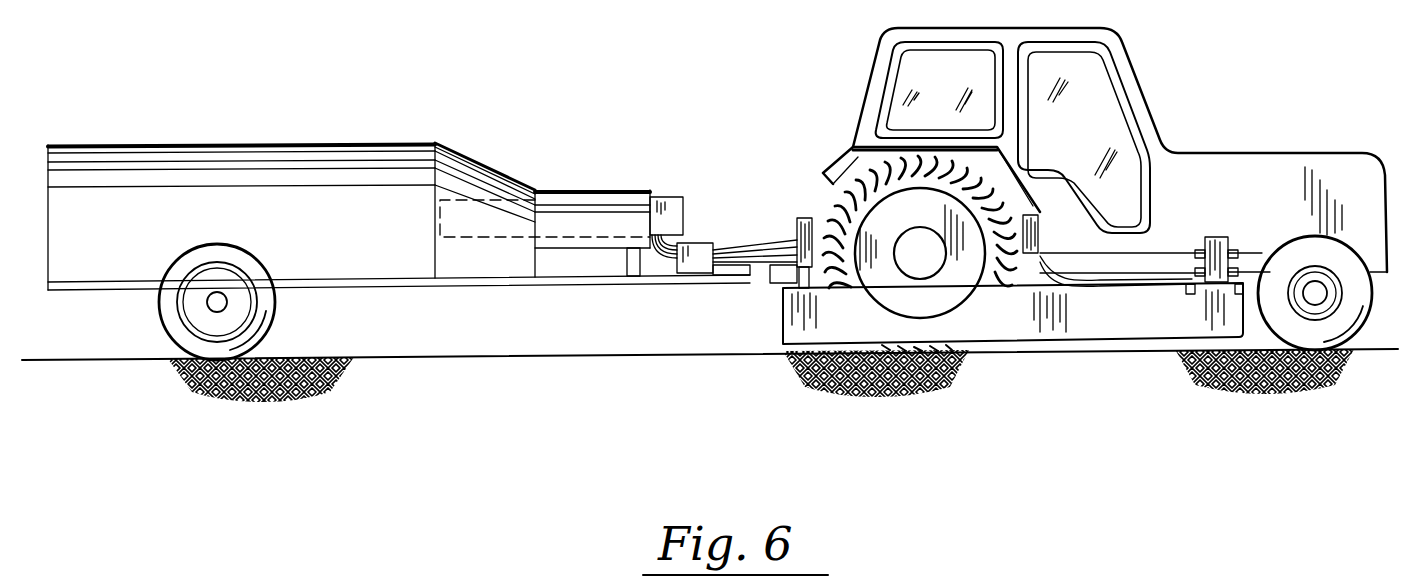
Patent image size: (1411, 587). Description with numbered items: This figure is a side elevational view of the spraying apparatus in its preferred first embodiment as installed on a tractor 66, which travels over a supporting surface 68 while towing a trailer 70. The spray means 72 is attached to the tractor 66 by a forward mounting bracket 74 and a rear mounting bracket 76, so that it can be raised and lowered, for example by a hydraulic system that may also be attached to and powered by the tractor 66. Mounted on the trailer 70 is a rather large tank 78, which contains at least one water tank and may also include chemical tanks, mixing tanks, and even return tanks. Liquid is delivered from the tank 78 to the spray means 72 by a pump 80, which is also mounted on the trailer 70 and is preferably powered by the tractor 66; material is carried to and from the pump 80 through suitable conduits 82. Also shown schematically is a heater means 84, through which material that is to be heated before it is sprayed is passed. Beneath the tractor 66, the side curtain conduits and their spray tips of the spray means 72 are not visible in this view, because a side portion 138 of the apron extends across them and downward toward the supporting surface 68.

The tractor 66 is at (1207, 153).
The supporting surface 68 is at (703, 398).
The trailer 70 is at (399, 229).
The spray means 72 is at (1013, 343).
The forward mounting bracket 74 is at (1216, 231).
The rear mounting bracket 76 is at (800, 203).
The tank 78 is at (158, 143).
The pump 80 is at (690, 266).
The conduits 82 is at (775, 240).
The heater means 84 is at (478, 237).
The side portion of apron 138 is at (982, 325).